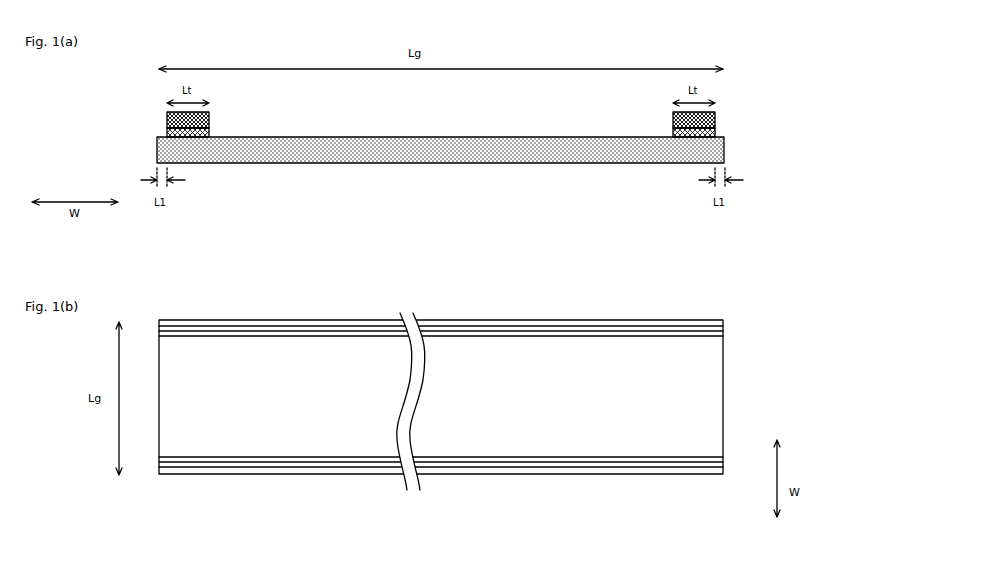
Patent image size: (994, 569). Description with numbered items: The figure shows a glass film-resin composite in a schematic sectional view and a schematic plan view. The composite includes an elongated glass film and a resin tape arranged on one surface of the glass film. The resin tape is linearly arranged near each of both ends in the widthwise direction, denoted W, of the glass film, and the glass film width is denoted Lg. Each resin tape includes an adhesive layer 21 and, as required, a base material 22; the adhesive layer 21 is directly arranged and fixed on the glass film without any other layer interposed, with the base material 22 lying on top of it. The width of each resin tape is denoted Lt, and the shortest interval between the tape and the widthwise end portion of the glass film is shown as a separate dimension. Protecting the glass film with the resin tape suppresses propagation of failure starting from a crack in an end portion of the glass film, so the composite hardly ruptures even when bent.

The adhesive layer 21 is at (167, 131).
The base material 22 is at (167, 118).